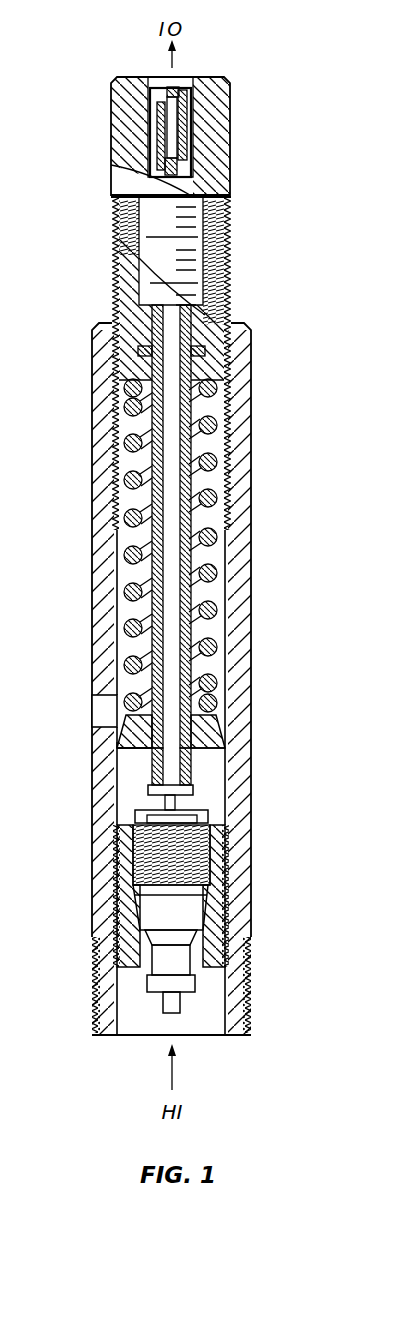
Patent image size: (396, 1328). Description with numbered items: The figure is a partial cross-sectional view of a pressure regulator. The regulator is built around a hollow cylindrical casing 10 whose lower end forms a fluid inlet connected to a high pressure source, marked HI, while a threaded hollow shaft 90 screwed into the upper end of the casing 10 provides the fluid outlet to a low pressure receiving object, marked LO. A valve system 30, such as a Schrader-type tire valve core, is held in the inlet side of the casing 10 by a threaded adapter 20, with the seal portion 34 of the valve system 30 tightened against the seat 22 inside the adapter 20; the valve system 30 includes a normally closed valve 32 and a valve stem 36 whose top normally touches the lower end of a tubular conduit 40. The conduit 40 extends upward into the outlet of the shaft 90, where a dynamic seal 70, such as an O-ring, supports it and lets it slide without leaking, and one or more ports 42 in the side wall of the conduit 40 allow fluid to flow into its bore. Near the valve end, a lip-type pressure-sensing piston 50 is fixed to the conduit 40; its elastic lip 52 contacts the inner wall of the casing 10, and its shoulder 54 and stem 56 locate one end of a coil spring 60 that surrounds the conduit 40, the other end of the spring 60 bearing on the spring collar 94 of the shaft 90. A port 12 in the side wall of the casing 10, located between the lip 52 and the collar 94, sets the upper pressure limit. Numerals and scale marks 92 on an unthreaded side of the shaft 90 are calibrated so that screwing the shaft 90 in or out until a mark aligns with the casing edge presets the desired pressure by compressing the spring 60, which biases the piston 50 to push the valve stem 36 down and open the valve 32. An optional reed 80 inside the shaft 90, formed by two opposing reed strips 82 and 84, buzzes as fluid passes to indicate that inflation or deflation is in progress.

The hollow cylindrical casing 10 is at (102, 445).
The port 12 is at (102, 708).
The adapter 20 is at (113, 838).
The seat 22 is at (118, 905).
The valve system 30 is at (170, 950).
The valve 32 is at (180, 982).
The seal portion 34 is at (192, 920).
The valve stem 36 is at (180, 797).
The tubular conduit 40 is at (152, 610).
The ports 42 is at (187, 765).
The pressure-sensing structure 50 is at (218, 738).
The elastic lip 52 is at (117, 745).
The shoulder 54 is at (215, 715).
The stem 56 is at (215, 693).
The coil spring 60 is at (227, 567).
The dynamic seal 70 is at (200, 349).
The reed 80 is at (176, 168).
The reed strip 82 is at (183, 138).
The reed strip 84 is at (147, 106).
The hollow shaft 90 is at (215, 105).
The scale marks 92 is at (215, 270).
The spring collar 94 is at (120, 372).